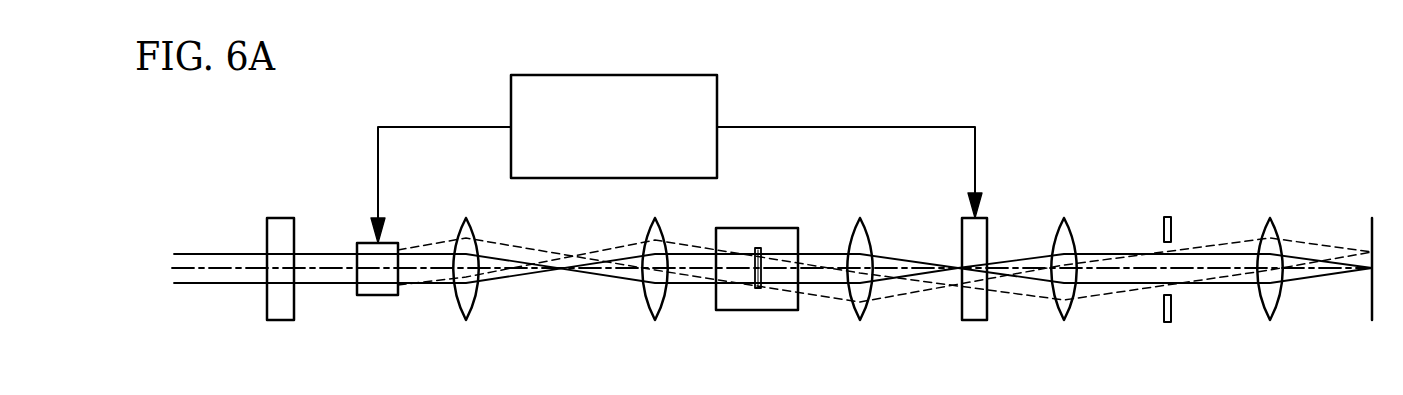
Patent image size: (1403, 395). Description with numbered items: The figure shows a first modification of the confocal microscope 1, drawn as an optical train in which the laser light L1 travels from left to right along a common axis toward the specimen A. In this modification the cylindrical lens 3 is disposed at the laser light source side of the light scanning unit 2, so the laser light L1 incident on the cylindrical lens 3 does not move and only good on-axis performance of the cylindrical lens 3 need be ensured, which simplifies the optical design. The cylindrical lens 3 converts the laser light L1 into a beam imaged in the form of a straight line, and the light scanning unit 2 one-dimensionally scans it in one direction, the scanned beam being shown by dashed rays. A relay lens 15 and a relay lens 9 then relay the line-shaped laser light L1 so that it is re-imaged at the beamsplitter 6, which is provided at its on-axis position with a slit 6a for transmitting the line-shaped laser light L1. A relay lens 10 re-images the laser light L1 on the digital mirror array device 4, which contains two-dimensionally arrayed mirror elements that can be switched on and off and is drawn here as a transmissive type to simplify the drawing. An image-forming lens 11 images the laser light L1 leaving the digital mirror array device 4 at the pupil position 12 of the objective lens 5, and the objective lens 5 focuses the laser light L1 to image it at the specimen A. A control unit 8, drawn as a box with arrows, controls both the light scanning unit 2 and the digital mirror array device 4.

The confocal microscope 1 is at (1123, 127).
The light scanning unit 2 is at (378, 297).
The cylindrical lens 3 is at (279, 216).
The digital mirror array device 4 is at (977, 322).
The objective lens 5 is at (1278, 308).
The beamsplitter 6 is at (770, 229).
The slit 6a is at (790, 228).
The control unit 8 is at (718, 93).
The relay lens 9 is at (662, 312).
The relay lens 10 is at (868, 312).
The image-forming lens 11 is at (1070, 230).
The pupil position 12 is at (1173, 228).
The relay lens 15 is at (477, 310).
The laser light L1 is at (502, 240).
The specimen A is at (1370, 232).